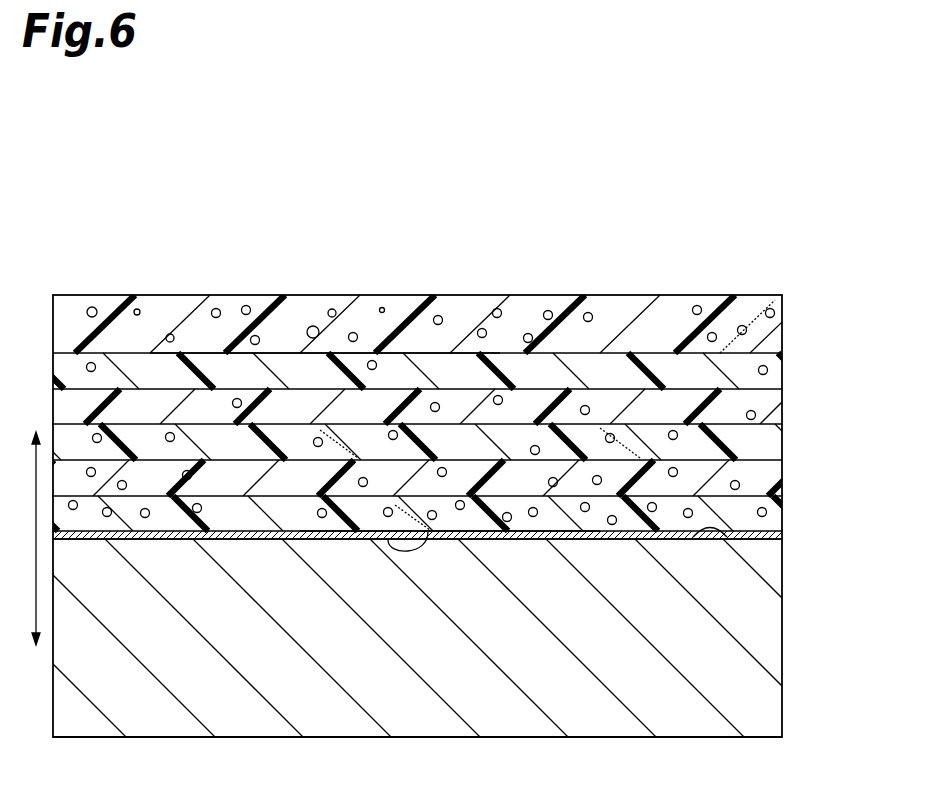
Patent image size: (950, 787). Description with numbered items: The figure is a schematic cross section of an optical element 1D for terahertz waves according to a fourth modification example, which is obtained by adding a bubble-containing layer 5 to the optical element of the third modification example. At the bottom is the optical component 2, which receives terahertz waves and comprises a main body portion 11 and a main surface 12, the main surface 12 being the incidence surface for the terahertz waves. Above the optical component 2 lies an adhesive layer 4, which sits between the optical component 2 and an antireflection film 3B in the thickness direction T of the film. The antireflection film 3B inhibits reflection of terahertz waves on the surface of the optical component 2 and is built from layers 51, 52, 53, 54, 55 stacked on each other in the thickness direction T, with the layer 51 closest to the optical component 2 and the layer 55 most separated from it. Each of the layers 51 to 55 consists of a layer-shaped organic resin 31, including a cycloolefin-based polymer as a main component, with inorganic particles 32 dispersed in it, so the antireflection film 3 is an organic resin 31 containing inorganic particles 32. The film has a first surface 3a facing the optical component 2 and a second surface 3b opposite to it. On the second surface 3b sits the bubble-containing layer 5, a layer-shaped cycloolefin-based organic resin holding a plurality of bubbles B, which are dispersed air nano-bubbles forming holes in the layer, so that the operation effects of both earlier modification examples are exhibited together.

The optical element 1D is at (800, 163).
The optical component 2 is at (835, 565).
The antireflection film 3 is at (767, 241).
The antireflection film 3B is at (876, 355).
The first surface 3a is at (428, 532).
The second surface 3b is at (333, 353).
The adhesive layer 4 is at (773, 535).
The bubble-containing layer 5 is at (772, 309).
The main body portion 11 is at (767, 643).
The main surface 12 is at (745, 538).
The organic resin 31 is at (668, 372).
The inorganic particles 32 is at (763, 370).
The layer 51 is at (786, 516).
The layer 52 is at (786, 481).
The layer 53 is at (786, 444).
The layer 54 is at (786, 406).
The layer 55 is at (786, 368).
The bubbles B is at (547, 315).
The thickness direction T is at (25, 538).